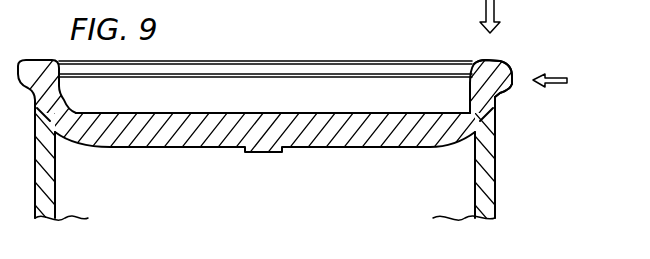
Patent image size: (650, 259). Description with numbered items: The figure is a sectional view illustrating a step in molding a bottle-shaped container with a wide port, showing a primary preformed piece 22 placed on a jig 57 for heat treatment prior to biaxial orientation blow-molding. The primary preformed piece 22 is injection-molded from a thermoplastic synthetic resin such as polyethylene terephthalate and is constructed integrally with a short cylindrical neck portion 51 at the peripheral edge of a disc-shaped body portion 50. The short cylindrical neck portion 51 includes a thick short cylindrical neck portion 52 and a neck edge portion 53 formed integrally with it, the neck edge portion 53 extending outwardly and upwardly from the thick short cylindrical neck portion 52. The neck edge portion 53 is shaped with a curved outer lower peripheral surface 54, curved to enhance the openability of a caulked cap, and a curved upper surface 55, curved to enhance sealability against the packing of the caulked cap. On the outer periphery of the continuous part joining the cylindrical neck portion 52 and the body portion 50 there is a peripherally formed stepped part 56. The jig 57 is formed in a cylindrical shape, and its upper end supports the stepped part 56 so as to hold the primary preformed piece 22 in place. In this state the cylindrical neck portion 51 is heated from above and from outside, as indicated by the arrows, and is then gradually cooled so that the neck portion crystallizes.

The primary preformed piece 22 is at (393, 113).
The body portion 50 is at (357, 130).
The short cylindrical neck portion 51 is at (509, 94).
The thick short cylindrical neck portion 52 is at (472, 101).
The neck edge portion 53 is at (507, 74).
The curved outer lower peripheral surface 54 is at (500, 98).
The curved upper surface 55 is at (476, 61).
The stepped part 56 is at (497, 128).
The jig 57 is at (50, 187).